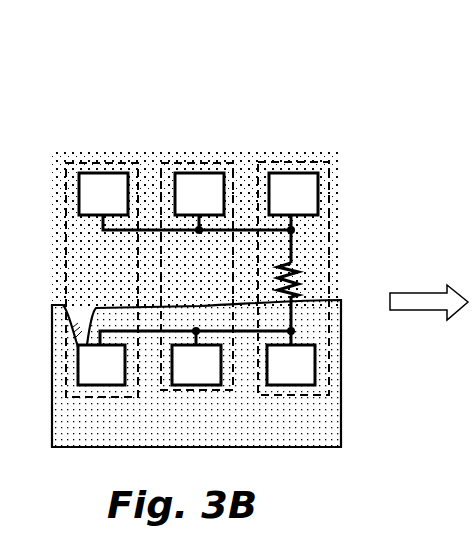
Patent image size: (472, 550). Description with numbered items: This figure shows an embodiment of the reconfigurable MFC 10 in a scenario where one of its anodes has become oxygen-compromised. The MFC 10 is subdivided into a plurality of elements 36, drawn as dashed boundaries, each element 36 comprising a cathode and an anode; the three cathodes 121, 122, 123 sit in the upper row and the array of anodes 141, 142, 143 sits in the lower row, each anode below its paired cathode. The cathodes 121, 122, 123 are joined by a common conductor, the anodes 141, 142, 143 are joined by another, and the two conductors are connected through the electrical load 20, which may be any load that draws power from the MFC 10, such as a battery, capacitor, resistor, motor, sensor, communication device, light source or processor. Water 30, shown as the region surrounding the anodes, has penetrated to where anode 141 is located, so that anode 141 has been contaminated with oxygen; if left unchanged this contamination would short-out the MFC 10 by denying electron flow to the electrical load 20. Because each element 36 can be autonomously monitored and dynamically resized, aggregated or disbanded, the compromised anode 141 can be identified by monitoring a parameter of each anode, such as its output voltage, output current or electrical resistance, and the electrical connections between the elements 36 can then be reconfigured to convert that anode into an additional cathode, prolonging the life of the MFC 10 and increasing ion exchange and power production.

The reconfigurable MFC 10 is at (108, 66).
The cathode 121 is at (106, 173).
The cathode 122 is at (192, 173).
The cathode 123 is at (298, 173).
The anode 141 is at (100, 385).
The anode 142 is at (196, 385).
The anode 143 is at (282, 385).
The electrical load 20 is at (279, 268).
The water 30 is at (112, 287).
The element 36 is at (65, 243).